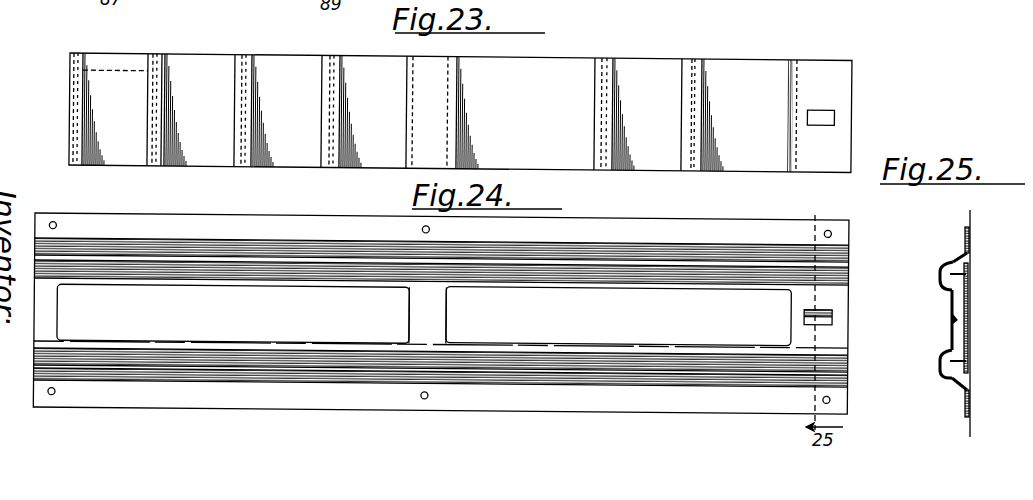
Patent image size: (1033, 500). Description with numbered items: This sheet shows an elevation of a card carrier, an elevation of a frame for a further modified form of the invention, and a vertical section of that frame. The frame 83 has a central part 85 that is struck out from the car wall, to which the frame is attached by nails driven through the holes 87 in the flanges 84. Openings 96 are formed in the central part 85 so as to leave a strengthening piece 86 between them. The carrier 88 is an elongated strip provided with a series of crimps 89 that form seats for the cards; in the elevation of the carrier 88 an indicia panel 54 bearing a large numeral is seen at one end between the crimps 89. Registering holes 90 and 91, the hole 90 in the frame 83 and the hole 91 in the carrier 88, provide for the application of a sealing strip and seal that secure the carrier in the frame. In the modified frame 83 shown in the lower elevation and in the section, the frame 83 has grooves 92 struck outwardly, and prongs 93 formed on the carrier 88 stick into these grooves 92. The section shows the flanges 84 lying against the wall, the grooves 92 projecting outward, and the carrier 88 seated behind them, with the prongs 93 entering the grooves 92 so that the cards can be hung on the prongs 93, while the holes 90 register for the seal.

In FIG. 23, the indicia panel 54 is at (115, 111).
In FIG. 24, the frame 83 is at (441, 302).
In FIG. 24, the flanges 84 is at (163, 229).
In FIG. 25, the flanges 84 is at (967, 240).
In FIG. 24, the central part 85 is at (121, 277).
In FIG. 24, the strengthening piece 86 is at (427, 315).
In FIG. 24, the holes 87 is at (422, 224).
In FIG. 23, the carrier 88 is at (317, 100).
In FIG. 25, the carrier 88 is at (967, 352).
In FIG. 23, the crimps 89 is at (237, 72).
In FIG. 24, the hole 90 is at (836, 315).
In FIG. 25, the hole 90 is at (953, 321).
In FIG. 23, the hole 91 is at (822, 105).
In FIG. 24, the grooves 92 is at (730, 266).
In FIG. 25, the grooves 92 is at (940, 271).
In FIG. 25, the prongs 93 is at (951, 291).
In FIG. 24, the openings 96 is at (543, 315).